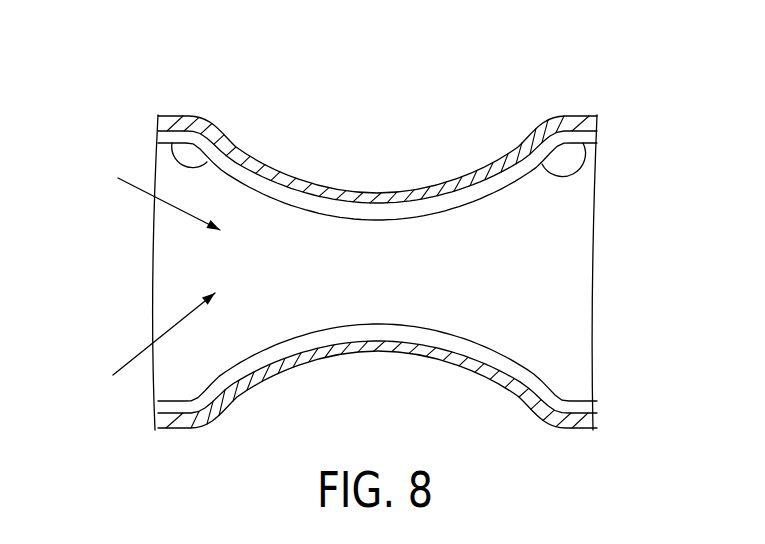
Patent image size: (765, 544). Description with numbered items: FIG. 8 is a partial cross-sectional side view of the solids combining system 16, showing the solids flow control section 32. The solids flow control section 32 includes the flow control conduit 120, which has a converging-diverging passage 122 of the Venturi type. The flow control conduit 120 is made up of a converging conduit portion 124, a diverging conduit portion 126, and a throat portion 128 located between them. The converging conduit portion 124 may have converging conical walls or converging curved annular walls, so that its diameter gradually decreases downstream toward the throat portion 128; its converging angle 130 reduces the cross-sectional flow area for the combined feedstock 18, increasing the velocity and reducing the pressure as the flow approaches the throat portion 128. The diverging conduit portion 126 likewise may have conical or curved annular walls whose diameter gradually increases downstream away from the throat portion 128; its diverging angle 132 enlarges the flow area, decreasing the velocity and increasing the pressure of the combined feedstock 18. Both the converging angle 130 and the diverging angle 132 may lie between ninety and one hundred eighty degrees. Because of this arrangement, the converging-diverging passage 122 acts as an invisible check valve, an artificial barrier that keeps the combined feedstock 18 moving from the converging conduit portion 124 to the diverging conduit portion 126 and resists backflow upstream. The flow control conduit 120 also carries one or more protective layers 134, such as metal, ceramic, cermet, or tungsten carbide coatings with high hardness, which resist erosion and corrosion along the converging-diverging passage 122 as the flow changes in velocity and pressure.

The solids combining system 16 is at (565, 75).
The combined feedstock 18 is at (140, 190).
The solids flow control section 32 is at (257, 122).
The flow control conduit 120 is at (378, 195).
The converging-diverging passage 122 is at (200, 274).
The converging conduit portion 124 is at (267, 160).
The diverging conduit portion 126 is at (568, 325).
The throat portion 128 is at (418, 277).
The converging angle 130 is at (188, 168).
The diverging angle 132 is at (569, 170).
The protective layers 134 is at (378, 330).